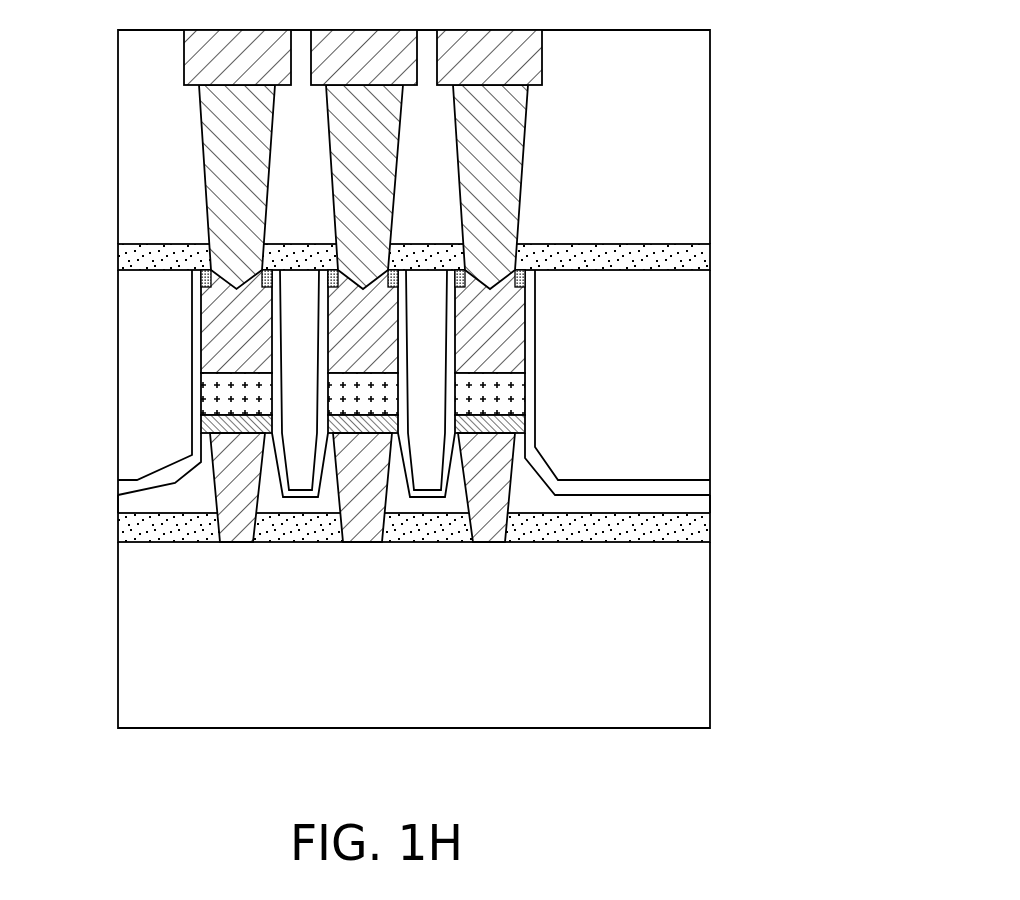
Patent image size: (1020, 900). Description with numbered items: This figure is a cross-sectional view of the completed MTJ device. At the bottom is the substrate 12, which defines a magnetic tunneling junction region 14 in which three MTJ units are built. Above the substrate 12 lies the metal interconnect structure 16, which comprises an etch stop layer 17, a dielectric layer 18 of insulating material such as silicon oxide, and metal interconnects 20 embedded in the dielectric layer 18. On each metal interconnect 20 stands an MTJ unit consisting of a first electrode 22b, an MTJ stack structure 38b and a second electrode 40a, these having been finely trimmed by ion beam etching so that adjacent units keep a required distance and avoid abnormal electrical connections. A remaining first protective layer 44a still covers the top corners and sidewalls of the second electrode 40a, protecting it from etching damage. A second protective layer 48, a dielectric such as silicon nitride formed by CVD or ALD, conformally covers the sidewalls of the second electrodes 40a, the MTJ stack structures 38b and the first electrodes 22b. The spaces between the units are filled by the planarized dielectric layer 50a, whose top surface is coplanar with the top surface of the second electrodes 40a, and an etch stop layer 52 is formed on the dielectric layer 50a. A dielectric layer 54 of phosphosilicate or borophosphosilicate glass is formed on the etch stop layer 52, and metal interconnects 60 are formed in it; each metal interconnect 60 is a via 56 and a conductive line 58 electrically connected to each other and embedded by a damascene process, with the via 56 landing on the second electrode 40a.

The substrate 12 is at (686, 711).
The magnetic tunneling junction region 14 is at (565, 737).
The metal interconnect structure 16 is at (463, 519).
The etch stop layer 17 is at (705, 533).
The dielectric layer 18 is at (705, 503).
The metal interconnects 20 is at (489, 545).
The first electrodes 22b is at (518, 423).
The MTJ stack structures 38b is at (518, 394).
The second electrodes 40a is at (520, 330).
The first protective layer 44a is at (522, 280).
The second protective layer 48 is at (705, 487).
The dielectric layer 50a is at (710, 375).
The etch stop layer 52 is at (710, 256).
The dielectric layer 54 is at (710, 152).
The via 56 is at (515, 117).
The conductive line 58 is at (533, 63).
The metal interconnects 60 is at (413, 159).